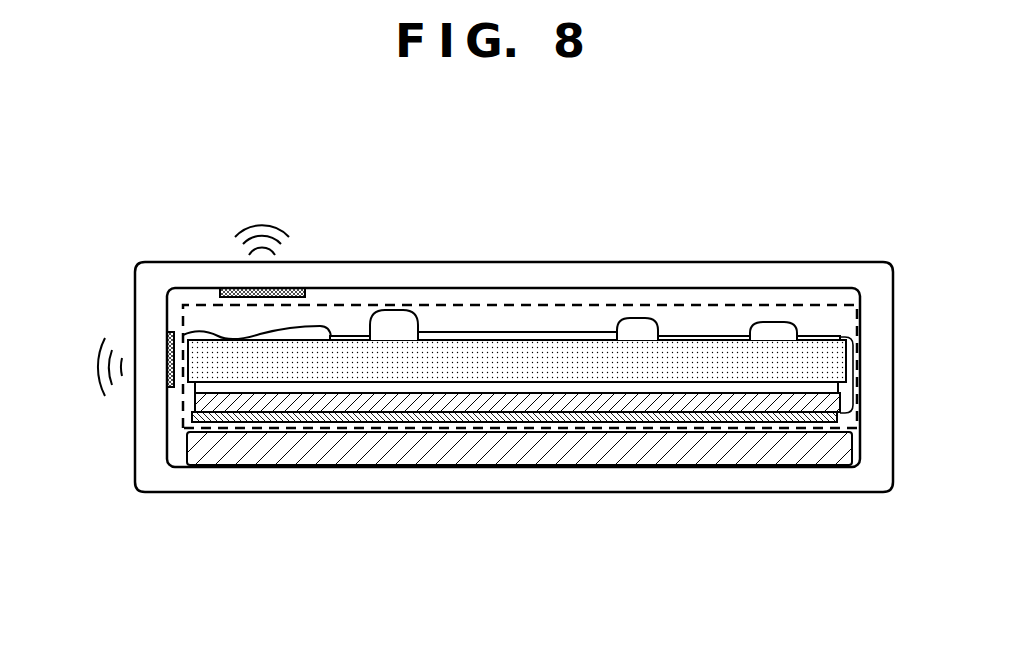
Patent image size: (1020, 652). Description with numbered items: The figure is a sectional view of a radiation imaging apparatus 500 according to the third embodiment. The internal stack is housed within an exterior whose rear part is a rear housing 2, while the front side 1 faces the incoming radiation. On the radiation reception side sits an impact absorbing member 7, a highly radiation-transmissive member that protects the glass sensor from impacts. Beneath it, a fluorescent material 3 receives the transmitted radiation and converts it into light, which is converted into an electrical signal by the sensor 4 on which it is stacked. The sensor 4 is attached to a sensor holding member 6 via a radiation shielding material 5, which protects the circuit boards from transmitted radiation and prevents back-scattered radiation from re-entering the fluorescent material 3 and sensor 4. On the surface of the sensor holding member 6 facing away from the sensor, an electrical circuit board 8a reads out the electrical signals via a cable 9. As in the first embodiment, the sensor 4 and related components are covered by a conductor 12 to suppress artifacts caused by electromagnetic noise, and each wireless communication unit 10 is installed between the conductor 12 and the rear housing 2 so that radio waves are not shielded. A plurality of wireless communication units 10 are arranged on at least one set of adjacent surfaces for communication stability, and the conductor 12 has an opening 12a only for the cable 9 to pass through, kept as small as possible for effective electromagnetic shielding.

The first case 1 is at (308, 489).
The rear housing 2 is at (860, 262).
The fluorescent material 3 is at (842, 417).
The sensor 4 is at (840, 402).
The radiation shielding material 5 is at (835, 388).
The sensor holding member 6 is at (842, 361).
The impact absorbing member 7 is at (847, 447).
The electrical circuit board 8a is at (820, 337).
The cable 9 is at (196, 335).
The wireless communication unit 10 is at (236, 289).
The conductor 12 is at (496, 303).
The opening 12a is at (185, 333).
The imaging apparatus 500 is at (739, 182).